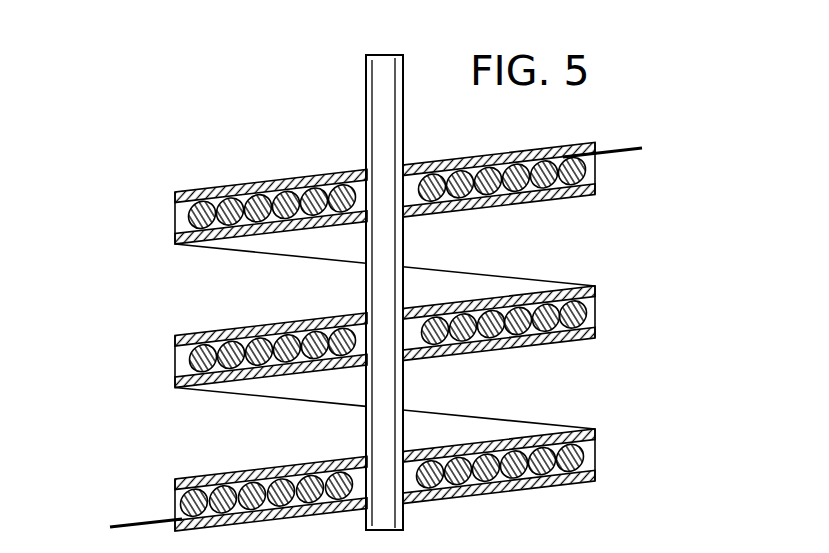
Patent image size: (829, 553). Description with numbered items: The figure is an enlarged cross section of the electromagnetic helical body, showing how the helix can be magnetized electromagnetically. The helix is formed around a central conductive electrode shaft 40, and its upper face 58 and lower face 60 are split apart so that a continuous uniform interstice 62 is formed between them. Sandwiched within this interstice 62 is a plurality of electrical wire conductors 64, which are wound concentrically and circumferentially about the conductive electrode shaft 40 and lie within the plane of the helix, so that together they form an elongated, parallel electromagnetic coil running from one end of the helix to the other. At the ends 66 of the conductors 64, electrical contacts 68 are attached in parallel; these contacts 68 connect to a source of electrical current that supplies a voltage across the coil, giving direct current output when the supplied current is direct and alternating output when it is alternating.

The conductive electrode shaft 40 is at (363, 97).
The upper face 58 is at (271, 185).
The lower face 60 is at (271, 227).
The continuous uniform interstice 62 is at (238, 213).
The electrical wire conductors 64 is at (599, 311).
The ends of conductors 66 is at (588, 165).
The electrical contacts 68 is at (621, 150).